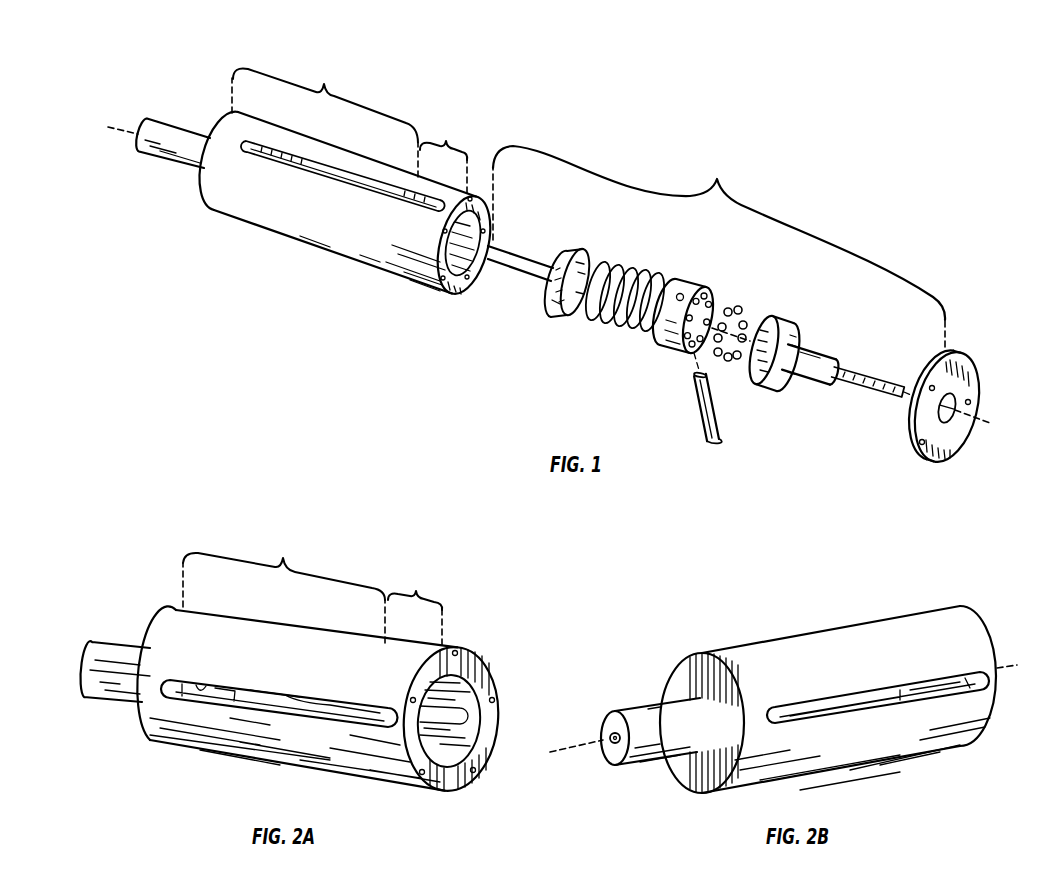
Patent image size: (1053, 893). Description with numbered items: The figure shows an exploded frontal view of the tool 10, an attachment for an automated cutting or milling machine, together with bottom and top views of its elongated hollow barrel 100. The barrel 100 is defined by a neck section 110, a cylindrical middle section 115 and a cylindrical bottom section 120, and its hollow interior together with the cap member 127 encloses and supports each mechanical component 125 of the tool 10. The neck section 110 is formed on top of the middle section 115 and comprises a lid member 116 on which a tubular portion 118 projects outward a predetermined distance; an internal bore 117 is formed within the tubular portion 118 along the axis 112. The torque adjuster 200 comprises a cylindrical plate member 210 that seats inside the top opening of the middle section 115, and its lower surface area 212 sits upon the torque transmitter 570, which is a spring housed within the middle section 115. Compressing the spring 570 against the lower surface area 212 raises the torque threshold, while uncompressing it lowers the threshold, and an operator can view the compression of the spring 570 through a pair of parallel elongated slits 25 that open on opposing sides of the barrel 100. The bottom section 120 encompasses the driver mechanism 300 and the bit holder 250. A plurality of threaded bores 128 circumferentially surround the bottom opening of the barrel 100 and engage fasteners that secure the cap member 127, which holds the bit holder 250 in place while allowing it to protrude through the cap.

In FIG. 1, the tool 10 is at (548, 311).
In FIG. 2A, the parallel elongated slits 25 is at (293, 710).
In FIG. 1, the elongated hollow barrel 100 is at (301, 200).
In FIG. 2A, the elongated hollow barrel 100 is at (292, 667).
In FIG. 2B, the elongated hollow barrel 100 is at (773, 685).
In FIG. 1, the neck section 110 is at (178, 121).
In FIG. 2B, the neck section 110 is at (615, 731).
In FIG. 1, the axis 112 is at (131, 131).
In FIG. 2B, the axis 112 is at (578, 747).
In FIG. 1, the middle section 115 is at (325, 117).
In FIG. 2A, the middle section 115 is at (284, 585).
In FIG. 2B, the lid member 116 is at (700, 767).
In FIG. 2B, the internal bore 117 is at (614, 741).
In FIG. 2B, the tubular portion 118 is at (652, 710).
In FIG. 1, the bottom section 120 is at (443, 155).
In FIG. 2A, the bottom section 120 is at (415, 605).
In FIG. 1, the mechanical component 125 is at (750, 307).
In FIG. 1, the cap member 127 is at (960, 377).
In FIG. 1, the bores 128 is at (462, 291).
In FIG. 1, the torque adjuster 200 is at (547, 240).
In FIG. 1, the plate member 210 is at (552, 297).
In FIG. 1, the lower surface area 212 is at (558, 302).
In FIG. 1, the bit holder 250 is at (783, 314).
In FIG. 1, the driver mechanism 300 is at (697, 284).
In FIG. 1, the torque transmitter 570 is at (677, 283).